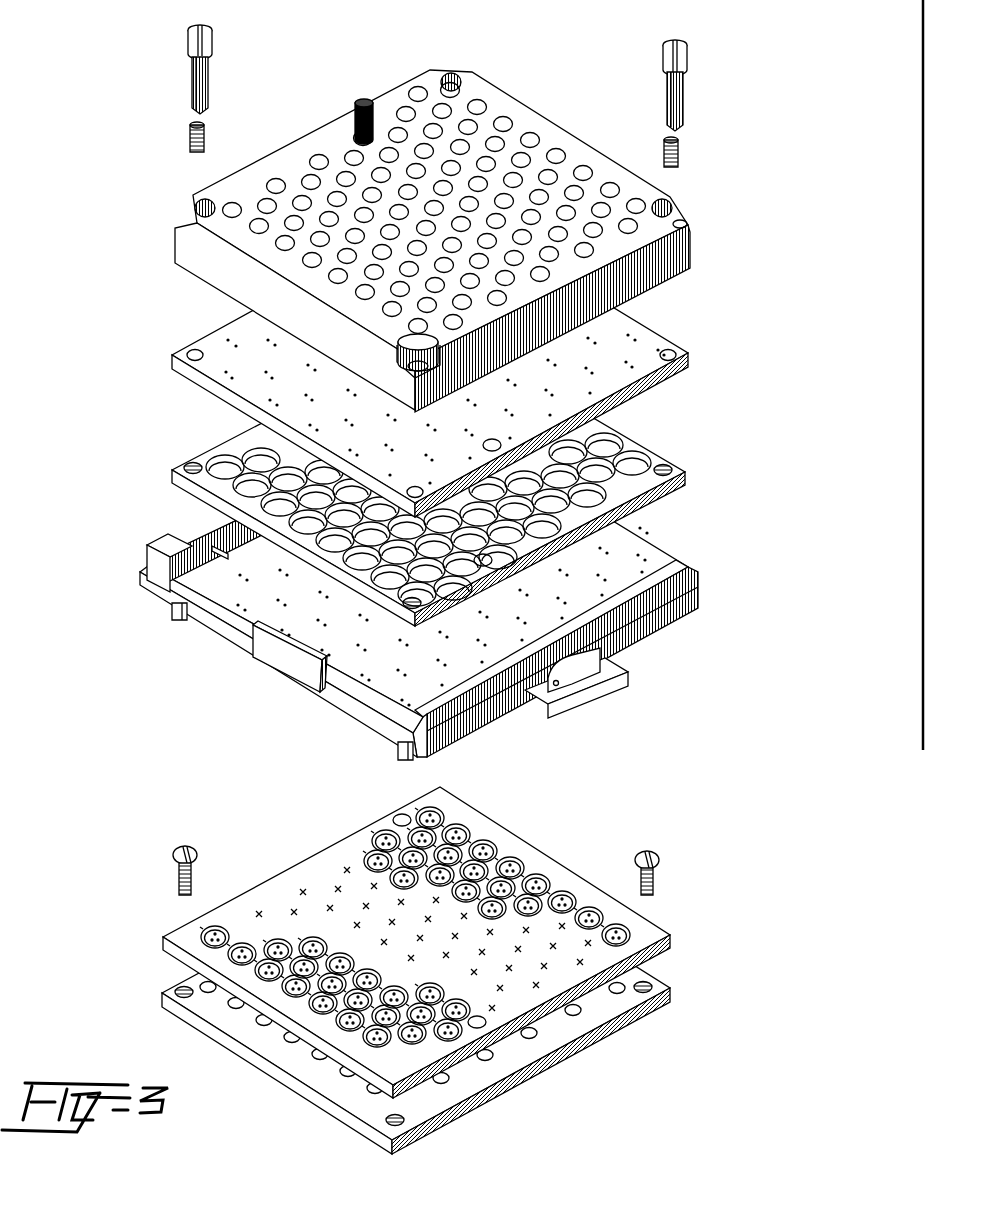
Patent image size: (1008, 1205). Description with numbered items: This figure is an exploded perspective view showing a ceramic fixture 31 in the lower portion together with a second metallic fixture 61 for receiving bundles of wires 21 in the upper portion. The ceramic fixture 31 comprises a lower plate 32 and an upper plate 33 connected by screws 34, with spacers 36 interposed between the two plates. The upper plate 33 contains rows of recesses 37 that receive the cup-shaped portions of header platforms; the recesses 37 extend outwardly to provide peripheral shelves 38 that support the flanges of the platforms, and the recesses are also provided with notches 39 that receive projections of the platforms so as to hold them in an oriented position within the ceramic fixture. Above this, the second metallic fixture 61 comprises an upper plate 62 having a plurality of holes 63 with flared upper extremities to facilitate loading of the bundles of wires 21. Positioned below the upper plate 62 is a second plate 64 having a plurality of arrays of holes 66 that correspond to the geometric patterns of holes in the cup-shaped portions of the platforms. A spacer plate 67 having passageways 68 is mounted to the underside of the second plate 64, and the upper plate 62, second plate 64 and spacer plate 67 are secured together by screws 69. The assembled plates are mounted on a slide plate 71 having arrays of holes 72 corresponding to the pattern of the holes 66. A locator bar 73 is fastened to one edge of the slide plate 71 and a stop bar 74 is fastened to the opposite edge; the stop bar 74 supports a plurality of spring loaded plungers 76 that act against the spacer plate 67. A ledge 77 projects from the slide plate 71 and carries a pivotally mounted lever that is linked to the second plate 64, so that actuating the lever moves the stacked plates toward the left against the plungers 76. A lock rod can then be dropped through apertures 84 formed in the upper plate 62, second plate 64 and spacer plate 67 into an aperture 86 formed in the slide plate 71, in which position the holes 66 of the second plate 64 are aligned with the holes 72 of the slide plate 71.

The bundles of wires 21 is at (357, 103).
The ceramic fixture 31 is at (518, 826).
The lower plate 32 is at (413, 974).
The upper plate 33 is at (416, 938).
The screws 34 is at (178, 867).
The spacers 36 is at (160, 947).
The recesses 37 is at (550, 880).
The peripheral shelves 38 is at (470, 828).
The notches 39 is at (444, 812).
The second metallic fixture 61 is at (688, 430).
The upper plate 62 is at (432, 306).
The holes 63 is at (507, 126).
The second plate 64 is at (440, 361).
The holes 66 is at (636, 360).
The spacer plate 67 is at (450, 477).
The passageways 68 is at (642, 466).
The screws 69 is at (192, 100).
The slide plate 71 is at (420, 566).
The holes 72 is at (603, 571).
The locator bar 73 is at (423, 587).
The stop bar 74 is at (150, 558).
The spring loaded plungers 76 is at (224, 557).
The ledge 77 is at (622, 672).
The apertures 84 is at (417, 90).
The aperture 86 is at (480, 677).